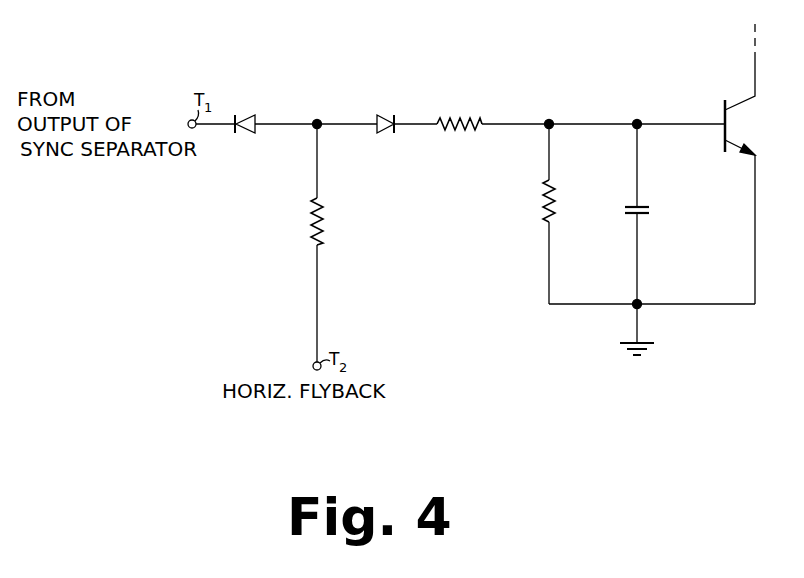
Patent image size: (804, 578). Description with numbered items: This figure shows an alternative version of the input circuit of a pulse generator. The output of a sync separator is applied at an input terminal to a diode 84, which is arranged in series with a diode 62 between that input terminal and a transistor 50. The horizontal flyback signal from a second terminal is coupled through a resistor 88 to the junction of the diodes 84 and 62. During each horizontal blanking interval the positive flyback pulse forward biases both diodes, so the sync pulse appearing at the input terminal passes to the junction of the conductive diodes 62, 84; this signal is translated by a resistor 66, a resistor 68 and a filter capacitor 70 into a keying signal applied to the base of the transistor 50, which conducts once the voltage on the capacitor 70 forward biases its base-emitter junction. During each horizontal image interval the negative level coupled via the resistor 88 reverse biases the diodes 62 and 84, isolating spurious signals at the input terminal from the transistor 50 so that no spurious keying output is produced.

The transistor 50 is at (760, 138).
The diode 62 is at (380, 133).
The resistor 66 is at (468, 117).
The resistor 68 is at (555, 195).
The filter capacitor 70 is at (647, 207).
The diode 84 is at (255, 130).
The resistor 88 is at (312, 222).